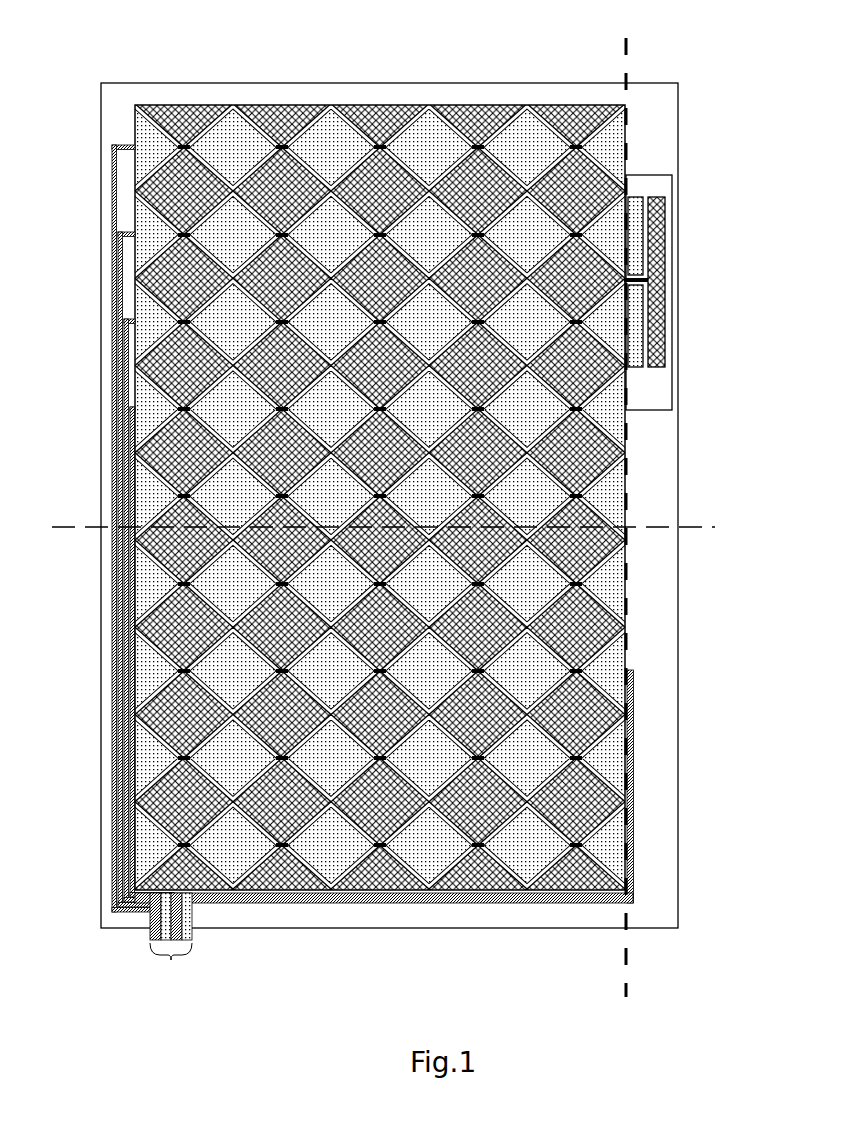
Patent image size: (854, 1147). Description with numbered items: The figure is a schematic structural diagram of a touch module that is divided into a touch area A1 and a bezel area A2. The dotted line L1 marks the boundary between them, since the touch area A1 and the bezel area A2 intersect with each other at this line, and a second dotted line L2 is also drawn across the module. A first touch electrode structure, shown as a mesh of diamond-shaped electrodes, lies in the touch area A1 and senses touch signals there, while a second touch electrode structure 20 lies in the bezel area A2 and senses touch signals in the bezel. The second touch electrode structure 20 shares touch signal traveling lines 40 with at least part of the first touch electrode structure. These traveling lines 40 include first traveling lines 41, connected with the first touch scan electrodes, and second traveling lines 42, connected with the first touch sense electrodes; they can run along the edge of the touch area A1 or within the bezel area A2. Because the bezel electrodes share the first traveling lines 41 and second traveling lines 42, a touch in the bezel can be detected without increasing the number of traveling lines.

The second touch electrode structure 20 is at (678, 182).
The touch signal traveling lines 40 is at (171, 945).
The first traveling lines 41 is at (112, 188).
The second traveling lines 42 is at (577, 893).
The touch area A1 is at (290, 105).
The bezel area A2 is at (652, 98).
The dotted line L1 is at (621, 505).
The second reference line L2 is at (398, 528).